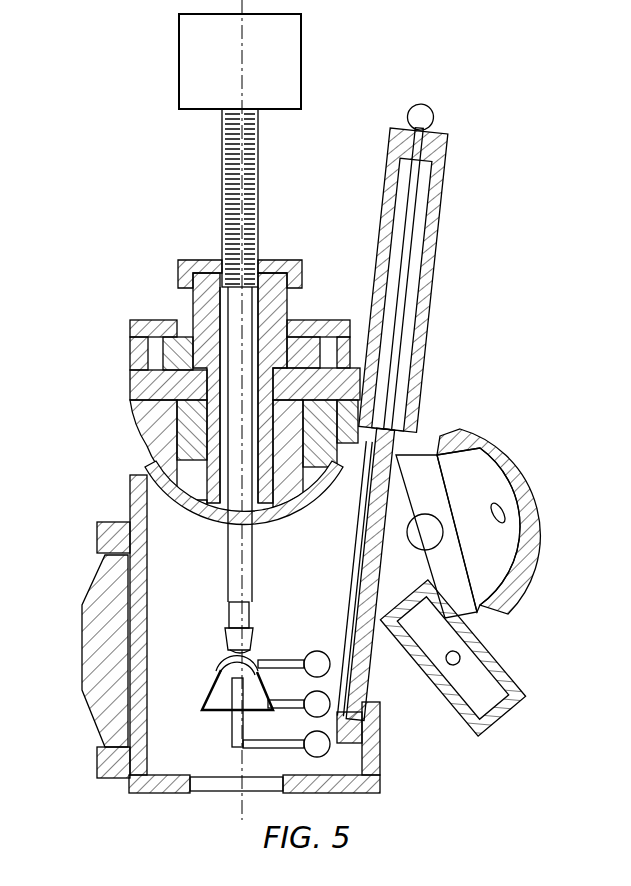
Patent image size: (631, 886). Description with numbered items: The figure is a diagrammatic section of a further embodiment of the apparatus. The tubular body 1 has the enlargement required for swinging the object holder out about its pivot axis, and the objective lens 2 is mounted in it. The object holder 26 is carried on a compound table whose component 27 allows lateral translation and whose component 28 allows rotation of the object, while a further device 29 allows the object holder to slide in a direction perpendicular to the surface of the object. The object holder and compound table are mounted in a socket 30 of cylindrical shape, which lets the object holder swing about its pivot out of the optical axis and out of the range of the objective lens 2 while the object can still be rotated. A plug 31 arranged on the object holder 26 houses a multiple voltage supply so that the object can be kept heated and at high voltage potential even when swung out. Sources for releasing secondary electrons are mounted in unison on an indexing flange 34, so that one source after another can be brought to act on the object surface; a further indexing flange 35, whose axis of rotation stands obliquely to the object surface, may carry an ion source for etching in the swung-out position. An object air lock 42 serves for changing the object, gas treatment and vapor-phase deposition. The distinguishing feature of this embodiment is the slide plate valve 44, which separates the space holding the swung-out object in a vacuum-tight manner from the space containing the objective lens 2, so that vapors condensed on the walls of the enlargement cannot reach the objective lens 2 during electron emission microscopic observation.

The tubular body 1 is at (374, 765).
The objective lens 2 is at (222, 662).
The object holder 26 is at (222, 141).
The compound table component for lateral translation 27 is at (202, 305).
The compound table component for rotation 28 is at (155, 380).
The sliding device 29 is at (183, 265).
The socket 30 is at (148, 427).
The plug 31 is at (290, 43).
The indexing flange 34 is at (100, 636).
The further indexing flange 35 is at (514, 478).
The object air lock 42 is at (425, 682).
The slide plate valve 44 is at (386, 484).